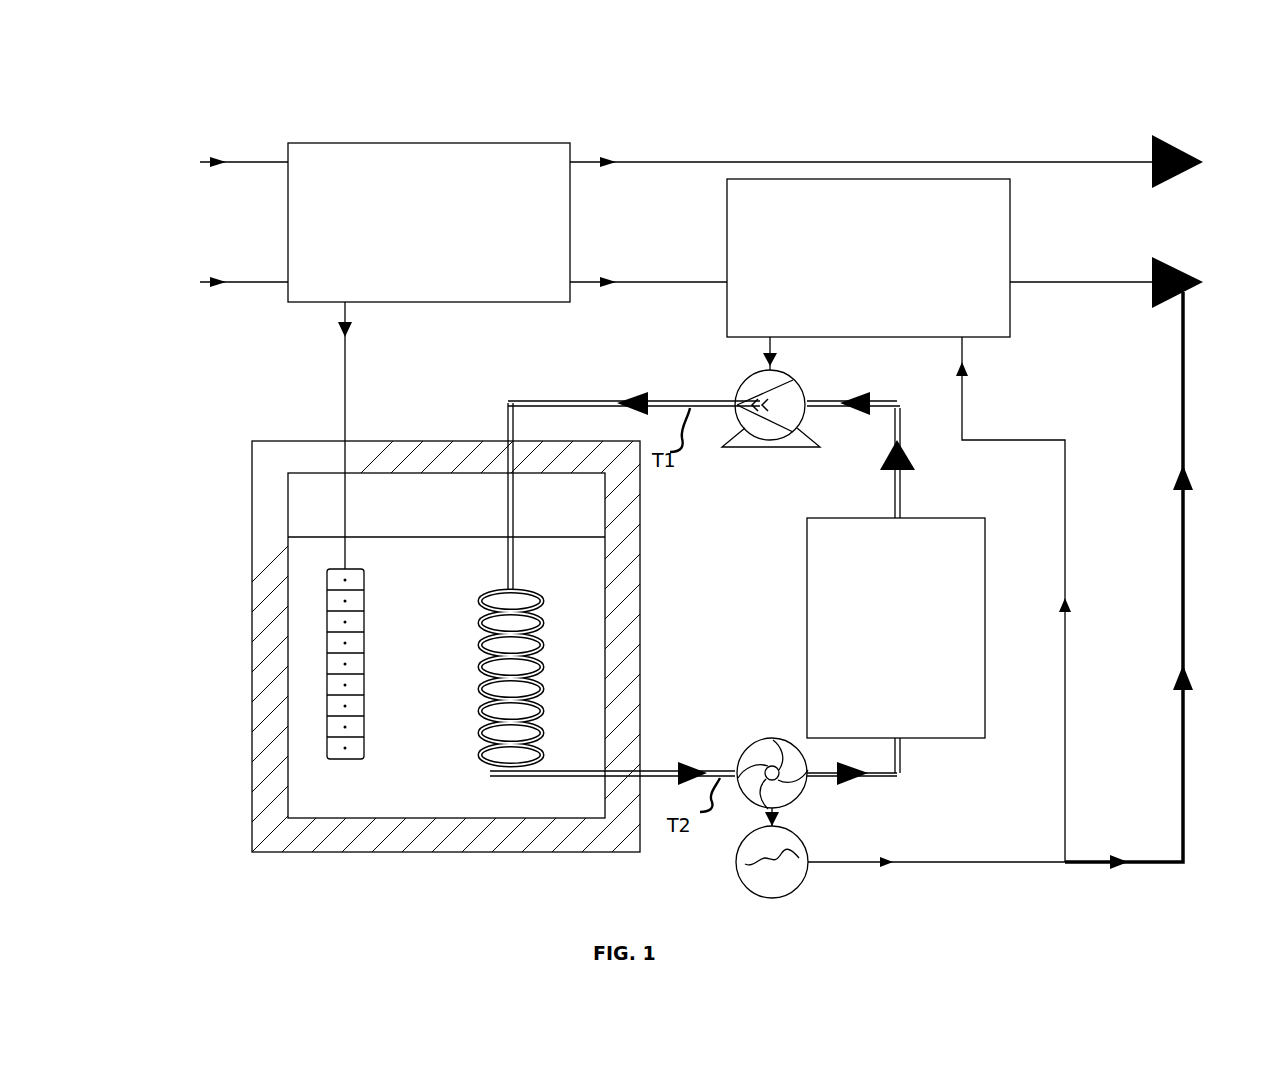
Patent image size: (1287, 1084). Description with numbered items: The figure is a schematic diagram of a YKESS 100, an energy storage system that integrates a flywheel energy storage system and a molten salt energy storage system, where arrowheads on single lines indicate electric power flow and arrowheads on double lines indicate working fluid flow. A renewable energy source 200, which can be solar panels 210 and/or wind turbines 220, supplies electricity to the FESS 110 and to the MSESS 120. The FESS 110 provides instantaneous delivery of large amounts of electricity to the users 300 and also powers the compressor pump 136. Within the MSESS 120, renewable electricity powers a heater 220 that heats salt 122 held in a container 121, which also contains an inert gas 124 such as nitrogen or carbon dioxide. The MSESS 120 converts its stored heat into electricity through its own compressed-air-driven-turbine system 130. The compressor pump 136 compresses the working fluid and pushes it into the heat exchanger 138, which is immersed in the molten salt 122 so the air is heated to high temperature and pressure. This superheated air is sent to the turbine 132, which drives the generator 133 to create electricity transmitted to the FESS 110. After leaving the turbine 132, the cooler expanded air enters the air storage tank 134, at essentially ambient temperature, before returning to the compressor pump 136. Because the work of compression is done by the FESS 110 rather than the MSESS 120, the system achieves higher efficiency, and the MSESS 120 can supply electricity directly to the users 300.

The YKESS 100 is at (948, 88).
The FESS 110 is at (727, 237).
The MSESS 120 is at (511, 618).
The container 121 is at (252, 516).
The salt 122 is at (426, 634).
The inert gas 124 is at (446, 515).
The compressed-air-driven-turbine system 130 is at (814, 892).
The turbine 132 is at (747, 757).
The generator 133 is at (808, 850).
The air storage tank 134 is at (806, 592).
The compressor pump 136 is at (741, 383).
The heat exchanger 138 is at (538, 640).
The renewable energy source 200 is at (429, 222).
The solar panels 210 is at (653, 161).
The heater 220 is at (326, 612).
The users 300 is at (1200, 221).